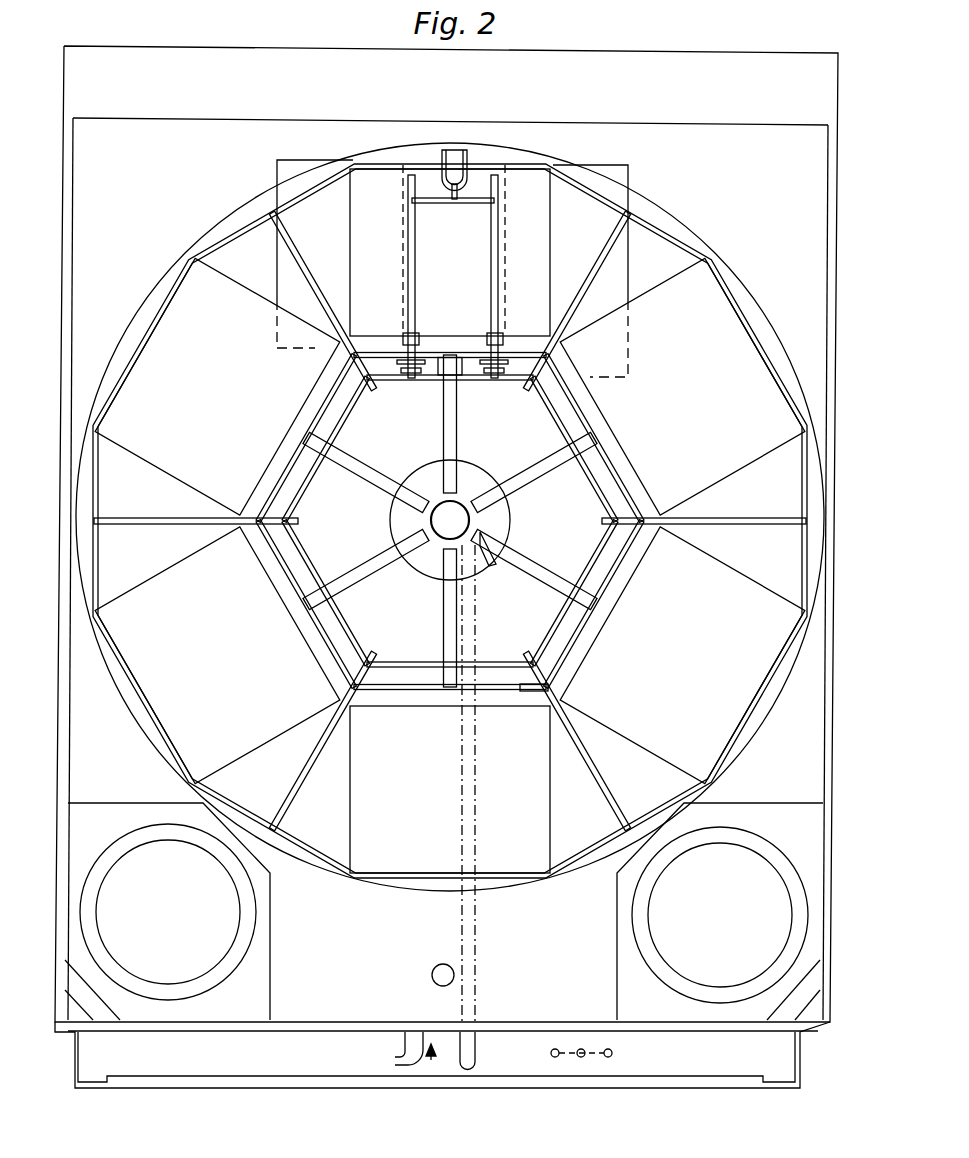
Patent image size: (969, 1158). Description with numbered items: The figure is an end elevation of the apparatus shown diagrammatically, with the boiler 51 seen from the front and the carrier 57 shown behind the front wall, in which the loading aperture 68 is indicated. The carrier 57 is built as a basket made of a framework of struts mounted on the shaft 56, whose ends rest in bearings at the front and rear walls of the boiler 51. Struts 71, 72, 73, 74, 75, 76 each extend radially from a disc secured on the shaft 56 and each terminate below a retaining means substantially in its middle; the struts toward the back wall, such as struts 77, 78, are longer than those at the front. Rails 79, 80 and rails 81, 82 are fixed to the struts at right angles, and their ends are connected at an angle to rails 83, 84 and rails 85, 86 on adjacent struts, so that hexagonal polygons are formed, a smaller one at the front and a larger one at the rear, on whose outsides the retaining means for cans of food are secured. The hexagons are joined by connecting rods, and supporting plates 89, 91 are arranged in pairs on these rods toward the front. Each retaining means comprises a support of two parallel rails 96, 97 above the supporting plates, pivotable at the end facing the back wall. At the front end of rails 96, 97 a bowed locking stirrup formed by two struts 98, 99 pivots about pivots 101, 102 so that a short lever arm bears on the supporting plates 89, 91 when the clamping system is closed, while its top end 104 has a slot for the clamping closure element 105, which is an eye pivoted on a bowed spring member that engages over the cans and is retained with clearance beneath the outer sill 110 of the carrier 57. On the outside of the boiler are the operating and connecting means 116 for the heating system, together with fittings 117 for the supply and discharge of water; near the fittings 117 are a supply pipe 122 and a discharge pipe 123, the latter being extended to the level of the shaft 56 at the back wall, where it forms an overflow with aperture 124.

The boiler 51 is at (118, 127).
The shaft 56 is at (432, 522).
The carrier 57 is at (616, 270).
The aperture 68 is at (618, 172).
The strut 71 is at (457, 438).
The strut 72 is at (538, 470).
The strut 73 is at (545, 572).
The strut 74 is at (443, 618).
The strut 75 is at (378, 578).
The strut 76 is at (354, 472).
The strut 77 is at (445, 363).
The strut 78 is at (445, 672).
The rail 79 is at (423, 380).
The rail 80 is at (486, 672).
The rail 81 is at (466, 366).
The rail 82 is at (520, 692).
The rail 83 is at (303, 486).
The rail 84 is at (288, 460).
The rail 85 is at (600, 490).
The rail 86 is at (607, 455).
The supporting plate 89 is at (522, 384).
The supporting plate 91 is at (376, 384).
The rail 96 is at (422, 333).
The rail 97 is at (484, 345).
The strut 98 is at (407, 210).
The strut 99 is at (499, 228).
The pivot 101 is at (403, 360).
The pivot 102 is at (504, 360).
The top end 104 is at (457, 190).
The clamping closure element 105 is at (443, 150).
The outer sill 110 is at (296, 186).
The operating and connecting means 116 is at (270, 951).
The fittings 117 is at (429, 1062).
The supply pipe 122 is at (396, 1068).
The discharge pipe 123 is at (465, 1070).
The aperture 124 is at (488, 560).